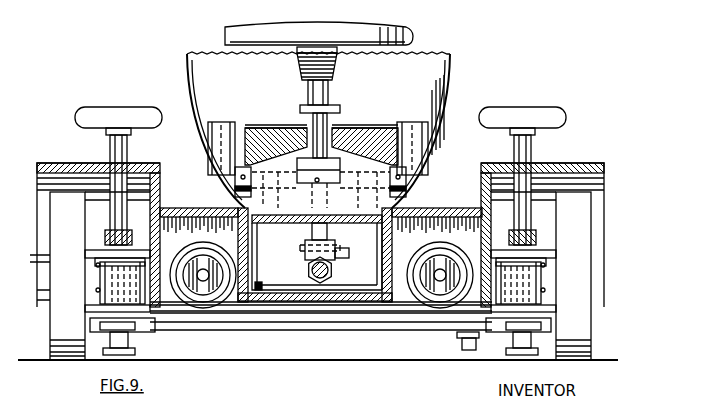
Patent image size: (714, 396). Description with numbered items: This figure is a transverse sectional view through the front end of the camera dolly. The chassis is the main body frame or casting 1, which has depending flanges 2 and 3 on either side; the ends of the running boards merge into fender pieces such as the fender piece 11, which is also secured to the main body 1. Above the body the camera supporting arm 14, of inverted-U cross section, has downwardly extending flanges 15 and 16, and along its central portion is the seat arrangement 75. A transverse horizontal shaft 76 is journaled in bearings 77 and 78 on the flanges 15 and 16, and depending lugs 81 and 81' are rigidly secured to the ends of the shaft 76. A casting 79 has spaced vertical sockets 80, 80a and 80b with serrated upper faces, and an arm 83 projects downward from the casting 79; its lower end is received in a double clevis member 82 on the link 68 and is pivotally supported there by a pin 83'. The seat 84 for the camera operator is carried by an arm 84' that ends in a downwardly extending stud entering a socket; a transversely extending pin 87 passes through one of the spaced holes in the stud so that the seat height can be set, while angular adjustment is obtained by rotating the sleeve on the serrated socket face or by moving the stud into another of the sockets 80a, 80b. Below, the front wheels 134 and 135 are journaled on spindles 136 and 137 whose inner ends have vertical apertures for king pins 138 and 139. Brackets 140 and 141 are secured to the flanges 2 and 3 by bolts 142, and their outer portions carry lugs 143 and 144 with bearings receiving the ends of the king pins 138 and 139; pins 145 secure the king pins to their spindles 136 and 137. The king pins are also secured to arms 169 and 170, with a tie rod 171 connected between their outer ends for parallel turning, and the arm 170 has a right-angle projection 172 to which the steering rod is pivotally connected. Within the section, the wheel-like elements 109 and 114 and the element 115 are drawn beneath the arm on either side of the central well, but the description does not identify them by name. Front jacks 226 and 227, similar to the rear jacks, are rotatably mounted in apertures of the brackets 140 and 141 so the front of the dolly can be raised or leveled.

The main body frame 1 is at (190, 208).
The depending flange 2 is at (203, 281).
The depending flange 3 is at (470, 325).
The fender piece 11 is at (80, 165).
The camera supporting arm 14 is at (446, 96).
The downwardly extending flange 15 is at (258, 290).
The downwardly extending flange 16 is at (380, 290).
The link 68 is at (330, 277).
The seat arrangement 75 is at (362, 122).
The transverse horizontal shaft 76 is at (355, 165).
The bearing 77 is at (286, 196).
The bearing 78 is at (364, 196).
The casting 79 is at (278, 135).
The vertical socket 80 is at (222, 127).
The vertical socket 80a is at (328, 125).
The vertical socket 80b is at (420, 165).
The depending lug 81 is at (224, 185).
The depending lug 81' is at (423, 185).
The double clevis member 82 is at (338, 246).
The arm 83 is at (301, 241).
The pin 83' is at (305, 256).
The seat 84 is at (319, 22).
The seat arm 84' is at (300, 76).
The transversely extending pin 87 is at (304, 108).
The left wheel 109 is at (207, 280).
The right wheel 114 is at (440, 256).
The wheel rim 115 is at (207, 258).
The front wheel 134 is at (70, 360).
The front wheel 135 is at (578, 358).
The spindle 136 is at (96, 266).
The spindle 137 is at (545, 272).
The king pin 138 is at (92, 250).
The king pin 139 is at (540, 250).
The bracket 140 is at (198, 230).
The bracket 141 is at (543, 262).
The bolt 142 is at (135, 322).
The lug 143 is at (98, 260).
The lug 144 is at (95, 309).
The pin 145 is at (100, 268).
The arm 169 is at (92, 326).
The arm 170 is at (556, 325).
The tie rod 171 is at (330, 325).
The projection 172 is at (492, 333).
The jack 226 is at (127, 160).
The jack 227 is at (514, 160).